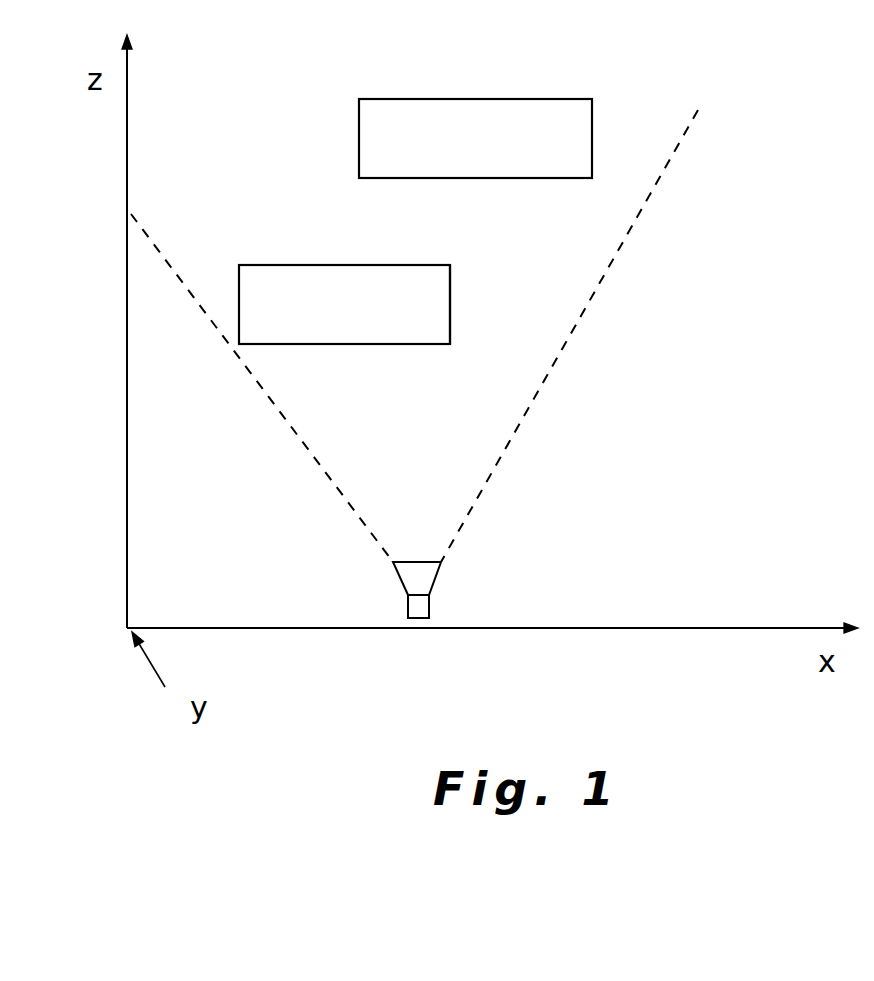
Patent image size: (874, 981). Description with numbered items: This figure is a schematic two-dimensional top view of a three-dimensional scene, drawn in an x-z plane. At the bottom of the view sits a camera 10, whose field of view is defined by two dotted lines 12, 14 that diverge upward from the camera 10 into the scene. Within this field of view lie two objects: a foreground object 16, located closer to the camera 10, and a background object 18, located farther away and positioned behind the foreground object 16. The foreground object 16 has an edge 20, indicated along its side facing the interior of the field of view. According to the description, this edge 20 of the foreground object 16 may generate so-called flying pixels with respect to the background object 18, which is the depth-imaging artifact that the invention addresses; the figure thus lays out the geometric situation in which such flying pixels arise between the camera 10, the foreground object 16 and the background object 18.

The camera 10 is at (455, 575).
The dotted line 12 is at (255, 410).
The dotted line 14 is at (652, 231).
The foreground object 16 is at (319, 322).
The background object 18 is at (450, 154).
The edge 20 is at (464, 312).